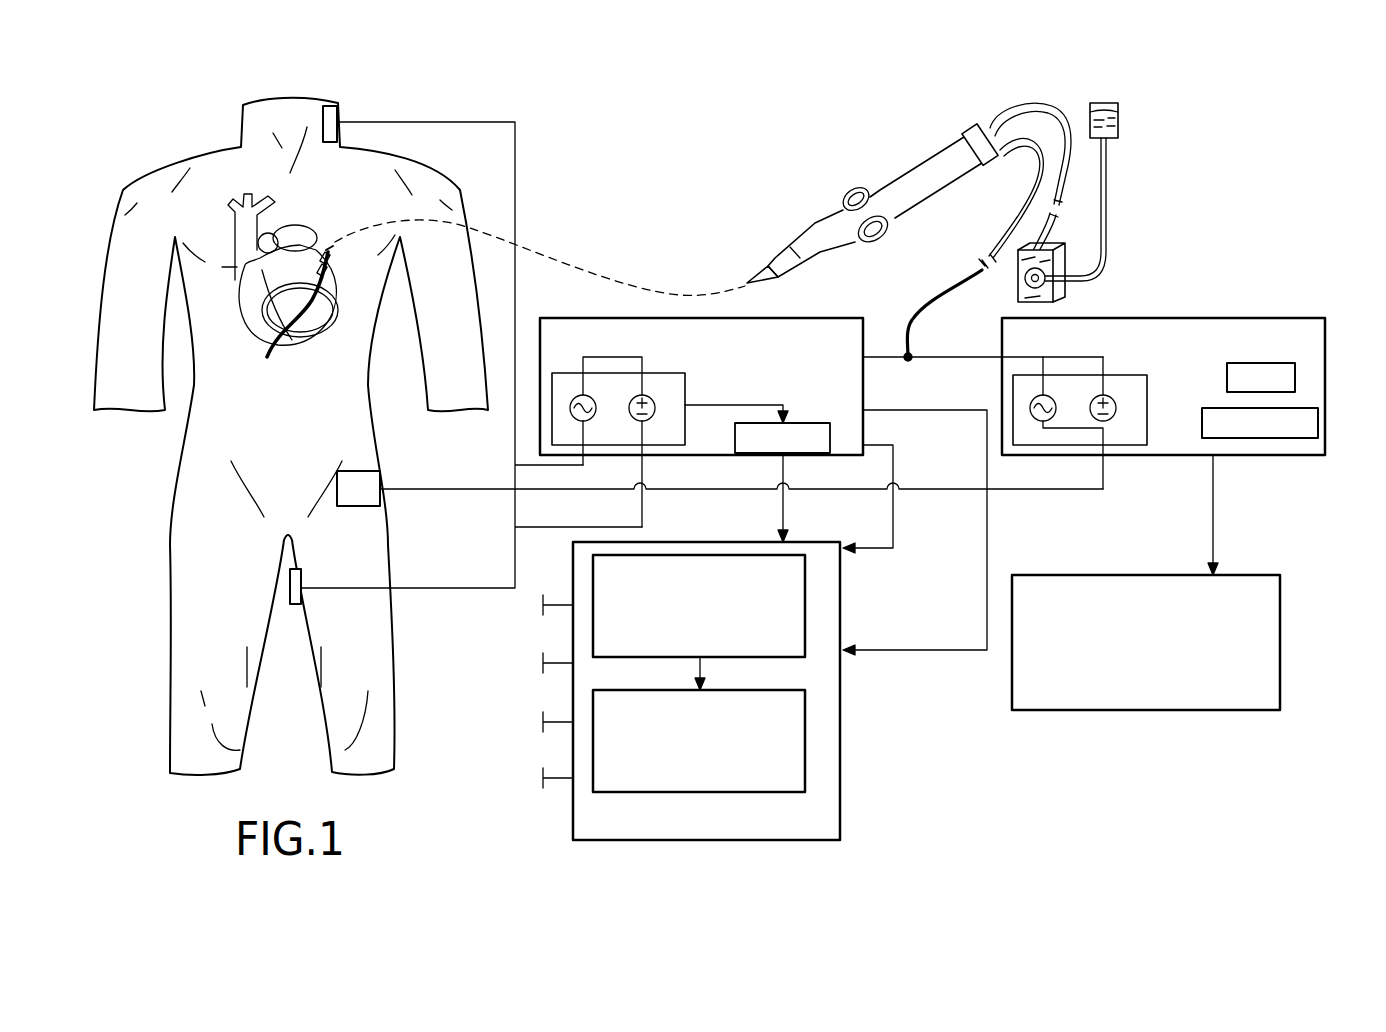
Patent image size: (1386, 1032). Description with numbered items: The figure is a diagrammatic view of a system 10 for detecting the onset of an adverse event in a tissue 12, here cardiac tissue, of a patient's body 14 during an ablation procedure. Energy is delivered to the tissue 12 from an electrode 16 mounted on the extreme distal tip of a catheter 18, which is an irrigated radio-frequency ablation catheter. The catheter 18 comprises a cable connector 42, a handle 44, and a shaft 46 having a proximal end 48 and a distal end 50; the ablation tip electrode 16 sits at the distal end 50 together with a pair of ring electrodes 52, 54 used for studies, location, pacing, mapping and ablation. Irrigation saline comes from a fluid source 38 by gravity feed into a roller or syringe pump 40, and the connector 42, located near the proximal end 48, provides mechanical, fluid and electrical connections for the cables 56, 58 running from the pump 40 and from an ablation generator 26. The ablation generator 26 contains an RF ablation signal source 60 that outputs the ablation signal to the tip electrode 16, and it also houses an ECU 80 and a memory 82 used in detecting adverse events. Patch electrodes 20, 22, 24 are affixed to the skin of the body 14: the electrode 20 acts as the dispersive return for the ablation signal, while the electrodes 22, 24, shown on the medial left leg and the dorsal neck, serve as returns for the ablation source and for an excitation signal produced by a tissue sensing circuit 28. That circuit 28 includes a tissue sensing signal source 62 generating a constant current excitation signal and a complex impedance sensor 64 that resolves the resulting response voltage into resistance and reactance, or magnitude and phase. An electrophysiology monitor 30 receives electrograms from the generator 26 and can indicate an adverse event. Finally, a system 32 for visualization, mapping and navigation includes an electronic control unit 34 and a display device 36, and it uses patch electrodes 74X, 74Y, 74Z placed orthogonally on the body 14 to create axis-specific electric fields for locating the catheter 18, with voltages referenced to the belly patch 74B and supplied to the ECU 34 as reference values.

The system 10 is at (645, 157).
The tissue 12 is at (338, 305).
The body 14 is at (179, 539).
The electrode 16 is at (292, 319).
The catheter 18 is at (872, 151).
The patch electrode 20 is at (380, 500).
The patch electrode 22 is at (292, 605).
The patch electrode 24 is at (337, 138).
The ablation generator 26 is at (1325, 348).
The tissue sensing circuit 28 is at (863, 382).
The electrophysiology (EP) monitor 30 is at (1280, 647).
The system for visualization, mapping, and navigation 32 is at (840, 800).
The electronic control unit 34 is at (805, 628).
The display device 36 is at (805, 737).
The fluid source 38 is at (1120, 130).
The pump 40 is at (1071, 228).
The cable connector 42 is at (978, 130).
The handle 44 is at (905, 170).
The shaft 46 is at (747, 280).
The proximal end 48 is at (780, 282).
The distal end 50 is at (298, 251).
The ring electrode 52 is at (336, 276).
The ring electrode 54 is at (333, 256).
The cable 56 is at (1068, 128).
The cable 58 is at (1025, 150).
The RF ablation signal source 60 is at (1147, 410).
The tissue sensing signal source 62 is at (685, 390).
The complex impedance sensor 64 is at (818, 453).
The belly patch 74B is at (555, 600).
The patch electrode 74X is at (558, 658).
The patch electrode 74Y is at (558, 717).
The patch electrode 74Z is at (558, 774).
The ECU 80 is at (1295, 380).
The memory 82 is at (1318, 425).